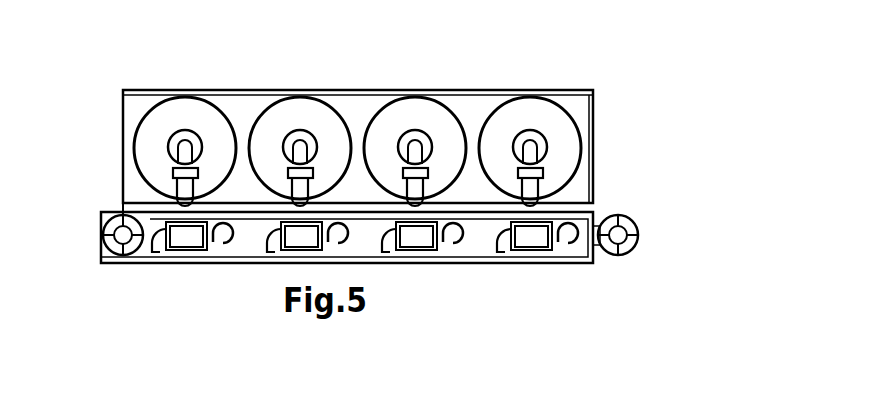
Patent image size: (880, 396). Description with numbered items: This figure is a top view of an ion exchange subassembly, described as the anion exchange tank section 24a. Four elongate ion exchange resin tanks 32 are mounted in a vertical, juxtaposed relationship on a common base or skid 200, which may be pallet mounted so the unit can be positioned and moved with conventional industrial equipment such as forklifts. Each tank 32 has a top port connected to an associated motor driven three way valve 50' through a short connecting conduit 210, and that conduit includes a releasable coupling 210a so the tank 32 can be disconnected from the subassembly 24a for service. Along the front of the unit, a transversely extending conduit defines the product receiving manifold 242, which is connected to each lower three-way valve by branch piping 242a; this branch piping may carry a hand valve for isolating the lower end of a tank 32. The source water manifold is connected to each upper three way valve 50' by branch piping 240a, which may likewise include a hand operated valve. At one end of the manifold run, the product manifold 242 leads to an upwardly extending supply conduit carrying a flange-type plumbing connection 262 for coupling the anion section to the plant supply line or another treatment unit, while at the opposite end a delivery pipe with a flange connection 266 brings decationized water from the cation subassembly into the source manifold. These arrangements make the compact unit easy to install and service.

The anion exchange tank section 24a is at (650, 115).
The common base or skid 200 is at (353, 90).
The ion exchange resin tank 32 is at (200, 126).
The releasable coupling 210a is at (204, 137).
The connecting conduit 210 is at (178, 200).
The product receiving manifold/conduit 242 is at (350, 259).
The flange-type plumbing connection 262 is at (105, 244).
The flange connection 266 is at (637, 224).
The motor driven three way valve 50' is at (371, 270).
The branch piping 242a is at (153, 252).
The branch piping 240a is at (227, 244).